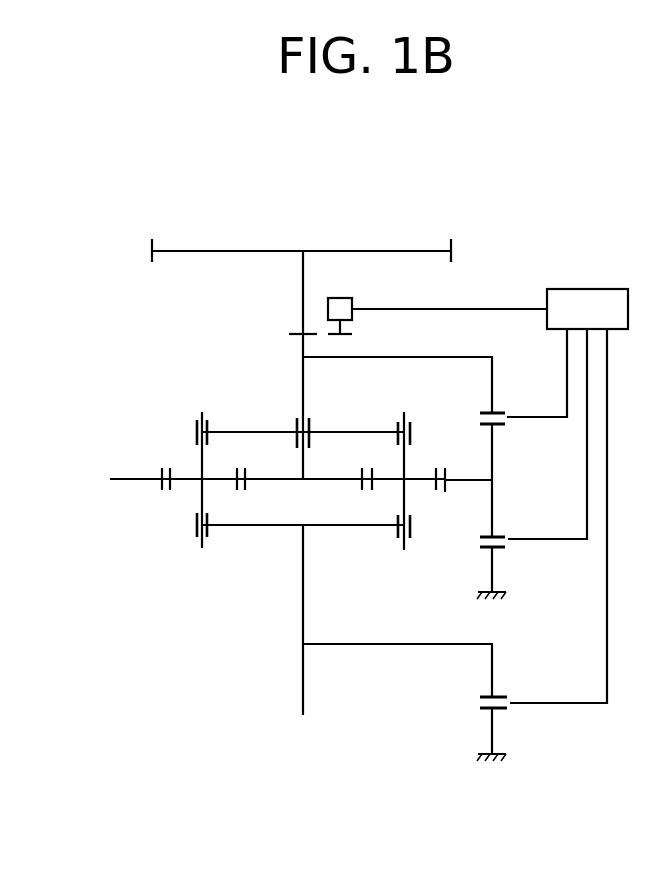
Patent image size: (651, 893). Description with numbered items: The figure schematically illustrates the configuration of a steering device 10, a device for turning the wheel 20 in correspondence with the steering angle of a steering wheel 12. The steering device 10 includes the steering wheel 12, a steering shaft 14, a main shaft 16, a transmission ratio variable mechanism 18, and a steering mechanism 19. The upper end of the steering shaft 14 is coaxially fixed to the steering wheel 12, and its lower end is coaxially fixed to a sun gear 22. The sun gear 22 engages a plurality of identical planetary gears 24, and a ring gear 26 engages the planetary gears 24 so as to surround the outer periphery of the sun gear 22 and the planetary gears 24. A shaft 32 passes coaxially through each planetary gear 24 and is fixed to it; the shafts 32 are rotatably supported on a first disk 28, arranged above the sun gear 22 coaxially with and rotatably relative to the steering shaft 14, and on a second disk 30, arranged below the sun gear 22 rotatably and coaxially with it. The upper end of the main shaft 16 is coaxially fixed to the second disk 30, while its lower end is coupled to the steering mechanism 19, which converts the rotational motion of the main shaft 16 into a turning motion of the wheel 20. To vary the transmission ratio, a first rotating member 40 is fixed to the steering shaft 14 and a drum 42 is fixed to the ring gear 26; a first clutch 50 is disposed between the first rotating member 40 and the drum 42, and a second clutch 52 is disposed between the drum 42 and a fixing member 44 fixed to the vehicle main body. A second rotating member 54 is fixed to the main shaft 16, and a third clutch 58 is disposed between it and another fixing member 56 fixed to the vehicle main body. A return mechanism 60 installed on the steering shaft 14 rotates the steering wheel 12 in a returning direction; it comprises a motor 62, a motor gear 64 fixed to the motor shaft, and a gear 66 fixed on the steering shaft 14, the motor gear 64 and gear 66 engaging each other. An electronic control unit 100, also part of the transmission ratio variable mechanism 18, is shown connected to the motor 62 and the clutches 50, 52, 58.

The steering device 10 is at (527, 184).
The steering wheel 12 is at (222, 251).
The steering shaft 14 is at (304, 263).
The main shaft 16 is at (305, 590).
The transmission ratio variable mechanism 18 is at (168, 403).
The steering mechanism 19 is at (330, 715).
The wheel 20 is at (272, 726).
The sun gear 22 is at (270, 481).
The planetary gear 24 is at (188, 480).
The ring gear 26 is at (471, 481).
The first disk 28 is at (258, 431).
The second disk 30 is at (275, 527).
The shaft 32 is at (197, 462).
The first rotating member 40 is at (438, 357).
The drum 42 is at (494, 450).
The fixing member 44 is at (495, 571).
The first clutch 50 is at (495, 412).
The second clutch 52 is at (497, 536).
The second rotating member 54 is at (434, 643).
The fixing member 56 is at (495, 731).
The third clutch 58 is at (498, 697).
The return mechanism 60 is at (438, 295).
The motor 62 is at (353, 299).
The motor gear 64 is at (352, 335).
The gear 66 is at (301, 333).
The electronic control unit 100 is at (603, 289).